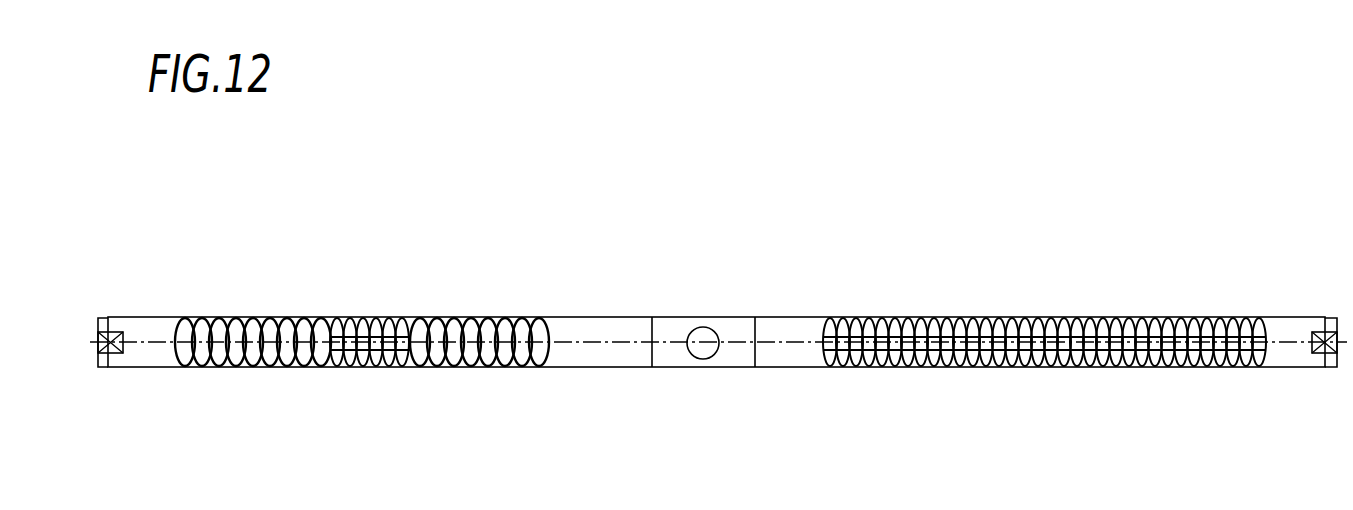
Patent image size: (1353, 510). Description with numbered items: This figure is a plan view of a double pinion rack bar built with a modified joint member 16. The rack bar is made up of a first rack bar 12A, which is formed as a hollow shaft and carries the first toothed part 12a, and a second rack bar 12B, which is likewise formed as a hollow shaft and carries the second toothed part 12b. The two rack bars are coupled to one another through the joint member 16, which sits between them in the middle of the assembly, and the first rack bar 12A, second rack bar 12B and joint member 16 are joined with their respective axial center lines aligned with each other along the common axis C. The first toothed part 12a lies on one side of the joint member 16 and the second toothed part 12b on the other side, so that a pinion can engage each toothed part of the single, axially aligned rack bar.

The first rack bar 12A is at (362, 345).
The second rack bar 12B is at (1024, 345).
The first toothed part 12a is at (388, 367).
The second toothed part 12b is at (1025, 367).
The joint member 16 is at (702, 367).
The central axis C is at (603, 342).